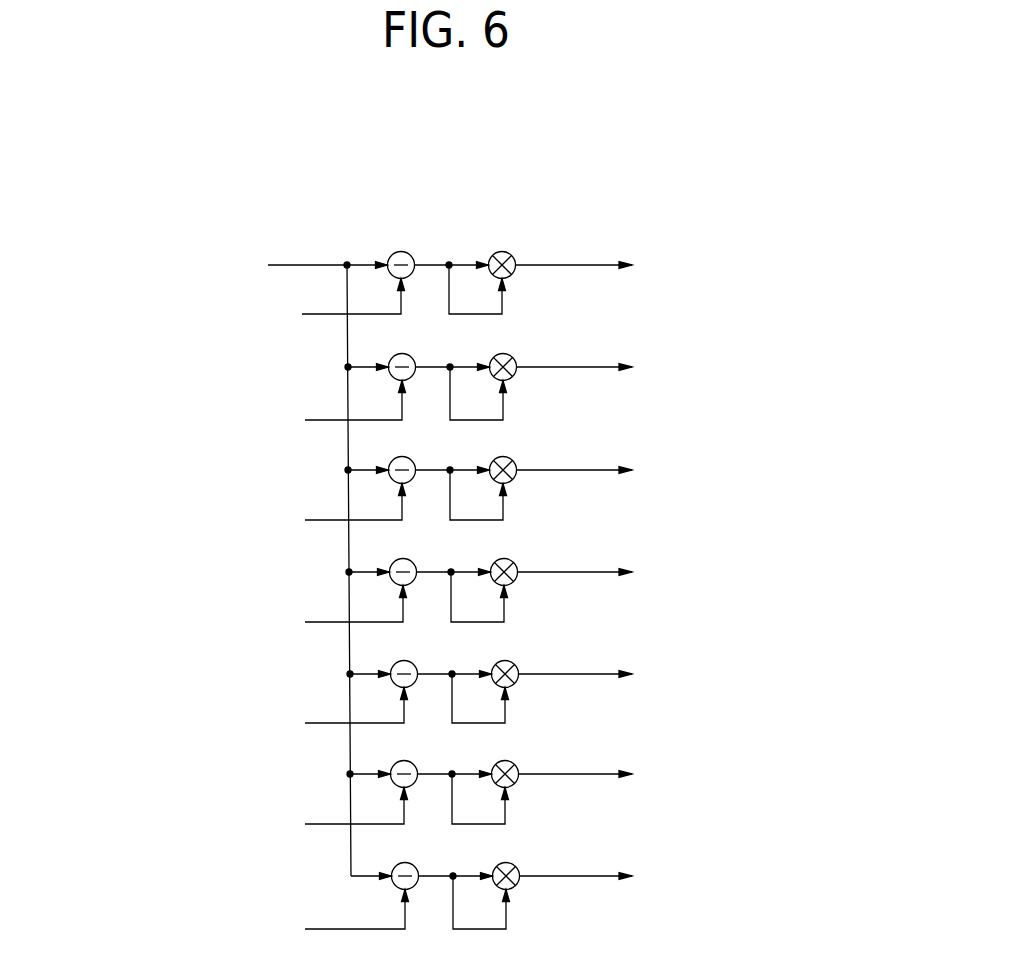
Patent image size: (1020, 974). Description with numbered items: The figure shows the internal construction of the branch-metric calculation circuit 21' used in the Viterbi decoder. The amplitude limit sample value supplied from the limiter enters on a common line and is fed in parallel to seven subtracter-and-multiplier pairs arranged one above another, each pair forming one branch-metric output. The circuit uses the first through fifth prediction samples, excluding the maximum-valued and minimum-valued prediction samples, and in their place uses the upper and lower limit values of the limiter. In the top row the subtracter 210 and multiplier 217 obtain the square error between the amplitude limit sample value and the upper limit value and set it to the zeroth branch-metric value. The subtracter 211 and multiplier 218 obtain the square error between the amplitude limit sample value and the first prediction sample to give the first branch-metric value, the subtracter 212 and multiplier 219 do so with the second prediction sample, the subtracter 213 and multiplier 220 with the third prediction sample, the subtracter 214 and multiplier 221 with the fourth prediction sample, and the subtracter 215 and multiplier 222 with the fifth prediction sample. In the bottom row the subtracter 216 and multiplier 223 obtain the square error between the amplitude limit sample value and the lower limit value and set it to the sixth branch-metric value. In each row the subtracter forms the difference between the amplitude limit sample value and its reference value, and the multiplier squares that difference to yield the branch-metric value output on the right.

The branch-metric calculation circuit 21' is at (432, 521).
The subtracter 210 is at (406, 252).
The subtracter 211 is at (409, 355).
The subtracter 212 is at (409, 458).
The subtracter 213 is at (410, 560).
The subtracter 214 is at (411, 662).
The subtracter 215 is at (411, 762).
The subtracter 216 is at (412, 864).
The multiplier 217 is at (509, 252).
The multiplier 218 is at (511, 355).
The multiplier 219 is at (511, 458).
The multiplier 220 is at (512, 560).
The multiplier 221 is at (513, 662).
The multiplier 222 is at (513, 762).
The multiplier 223 is at (514, 864).